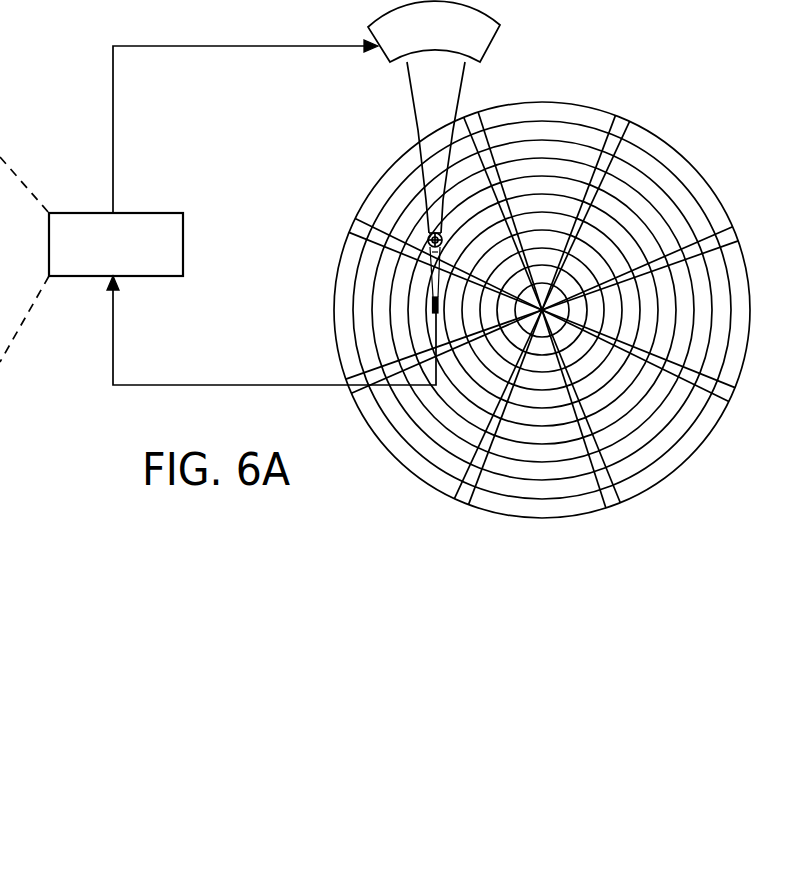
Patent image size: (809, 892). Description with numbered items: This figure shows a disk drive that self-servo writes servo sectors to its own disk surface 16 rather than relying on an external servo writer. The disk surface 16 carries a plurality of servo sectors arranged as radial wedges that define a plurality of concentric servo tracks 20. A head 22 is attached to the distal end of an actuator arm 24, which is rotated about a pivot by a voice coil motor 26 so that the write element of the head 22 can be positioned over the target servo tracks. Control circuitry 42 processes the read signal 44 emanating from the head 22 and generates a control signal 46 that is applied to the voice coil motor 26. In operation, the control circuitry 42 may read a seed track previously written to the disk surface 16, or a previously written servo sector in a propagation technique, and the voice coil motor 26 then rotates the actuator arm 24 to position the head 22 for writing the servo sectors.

The disk surface 16 is at (683, 150).
The servo tracks 20 is at (543, 130).
The head 22 is at (427, 316).
The actuator arm 24 is at (420, 133).
The voice coil motor 26 is at (383, 55).
The control circuitry 42 is at (152, 213).
The read signal 44 is at (231, 385).
The control signal 46 is at (113, 115).